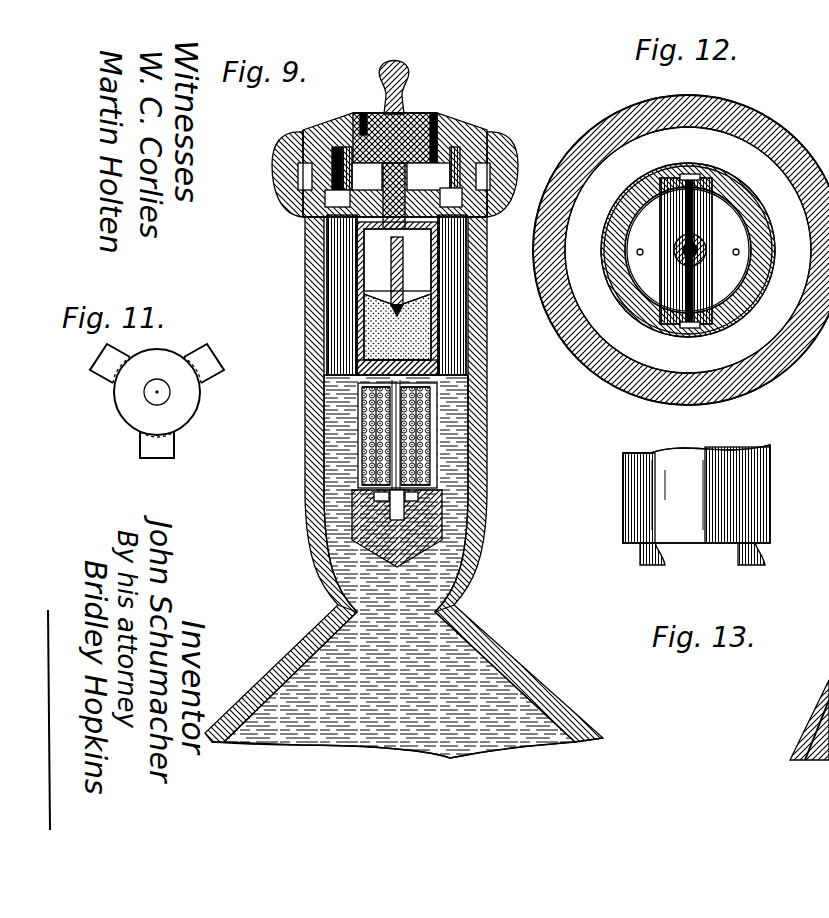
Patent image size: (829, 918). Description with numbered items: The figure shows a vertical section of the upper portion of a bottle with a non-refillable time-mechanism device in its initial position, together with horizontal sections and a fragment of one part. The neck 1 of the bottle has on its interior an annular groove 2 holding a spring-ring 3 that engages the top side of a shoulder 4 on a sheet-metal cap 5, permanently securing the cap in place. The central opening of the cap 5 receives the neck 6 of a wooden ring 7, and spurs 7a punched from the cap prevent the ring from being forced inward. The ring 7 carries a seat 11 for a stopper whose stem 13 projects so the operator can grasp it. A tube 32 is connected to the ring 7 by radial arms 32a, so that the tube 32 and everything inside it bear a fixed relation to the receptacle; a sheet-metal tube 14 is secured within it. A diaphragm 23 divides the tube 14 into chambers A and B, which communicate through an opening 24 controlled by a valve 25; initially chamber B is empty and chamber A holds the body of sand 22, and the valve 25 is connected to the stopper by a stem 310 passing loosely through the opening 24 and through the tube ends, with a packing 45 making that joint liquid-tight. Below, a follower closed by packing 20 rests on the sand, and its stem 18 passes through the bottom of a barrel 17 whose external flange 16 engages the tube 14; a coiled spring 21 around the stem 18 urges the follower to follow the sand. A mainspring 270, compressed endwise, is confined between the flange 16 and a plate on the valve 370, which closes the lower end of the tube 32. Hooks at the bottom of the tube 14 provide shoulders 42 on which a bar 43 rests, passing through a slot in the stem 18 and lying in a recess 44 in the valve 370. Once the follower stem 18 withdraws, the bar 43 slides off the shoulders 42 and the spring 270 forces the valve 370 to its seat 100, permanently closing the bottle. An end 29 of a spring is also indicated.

In FIG. 9, the neck 1 is at (488, 246).
In FIG. 12, the neck 1 is at (663, 385).
In FIG. 9, the annular groove 2 is at (505, 178).
In FIG. 9, the spring-ring 3 is at (500, 168).
In FIG. 9, the shoulder 4 is at (490, 207).
In FIG. 9, the cap 5 is at (448, 150).
In FIG. 9, the neck of ring 6 is at (433, 113).
In FIG. 9, the ring 7 is at (468, 160).
In FIG. 9, the spurs 7a is at (480, 170).
In FIG. 9, the seat 11 is at (300, 192).
In FIG. 9, the stem 13 is at (396, 70).
In FIG. 9, the sheet-metal tube 14 is at (440, 259).
In FIG. 13, the sheet-metal tube 14 is at (696, 494).
In FIG. 9, the external flange 16 is at (330, 385).
In FIG. 9, the barrel 17 is at (314, 401).
In FIG. 9, the stem of follower 18 is at (372, 436).
In FIG. 12, the stem of follower 18 is at (700, 258).
In FIG. 9, the packing 20 is at (440, 366).
In FIG. 9, the coiled spring 21 is at (428, 440).
In FIG. 9, the body of sand 22 is at (440, 336).
In FIG. 9, the diaphragm 23 is at (409, 271).
In FIG. 9, the opening 24 is at (397, 308).
In FIG. 9, the valve 25 is at (394, 295).
In FIG. 9, the end of mainspring 29 is at (470, 389).
In FIG. 9, the tubular extension 32 is at (326, 351).
In FIG. 12, the tubular extension 32 is at (617, 238).
In FIG. 9, the radial arms 32a is at (401, 168).
In FIG. 11, the radial arms 32a is at (158, 462).
In FIG. 12, the shoulders 42 is at (689, 172).
In FIG. 13, the shoulders 42 is at (649, 566).
In FIG. 9, the bar 43 is at (380, 504).
In FIG. 12, the bar 43 is at (705, 232).
In FIG. 9, the recess 44 is at (428, 500).
In FIG. 12, the recess 44 is at (720, 296).
In FIG. 9, the packing 45 is at (310, 225).
In FIG. 9, the seat 100 is at (338, 588).
In FIG. 9, the mainspring 270 is at (376, 450).
In FIG. 9, the stem 310 is at (397, 255).
In FIG. 9, the valve 370 is at (440, 540).
In FIG. 12, the valve 370 is at (640, 266).
In FIG. 9, the chamber A is at (397, 327).
In FIG. 9, the chamber B is at (397, 260).